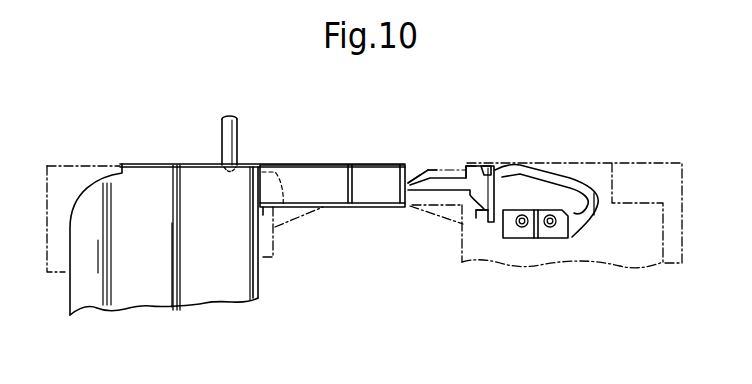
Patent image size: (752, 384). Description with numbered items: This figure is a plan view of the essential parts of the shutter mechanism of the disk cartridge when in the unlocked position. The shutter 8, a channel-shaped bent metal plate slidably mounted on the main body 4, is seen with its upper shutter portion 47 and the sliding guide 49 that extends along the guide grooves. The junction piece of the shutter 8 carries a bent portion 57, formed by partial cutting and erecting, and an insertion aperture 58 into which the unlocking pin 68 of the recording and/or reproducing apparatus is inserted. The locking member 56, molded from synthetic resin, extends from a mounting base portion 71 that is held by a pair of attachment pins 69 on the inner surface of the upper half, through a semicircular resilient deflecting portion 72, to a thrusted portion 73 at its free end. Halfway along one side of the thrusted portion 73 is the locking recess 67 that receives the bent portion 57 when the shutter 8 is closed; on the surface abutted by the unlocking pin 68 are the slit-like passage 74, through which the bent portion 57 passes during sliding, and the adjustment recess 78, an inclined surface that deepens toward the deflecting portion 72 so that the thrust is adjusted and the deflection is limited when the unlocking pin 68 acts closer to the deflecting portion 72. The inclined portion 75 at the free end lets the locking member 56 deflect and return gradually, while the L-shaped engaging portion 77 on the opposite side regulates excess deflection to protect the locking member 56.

The main body 4 is at (92, 168).
The shutter 8 is at (80, 290).
The upper shutter portion 47 is at (163, 298).
The sliding guide 49 is at (325, 173).
The locking member 56 is at (560, 172).
The bent portion 57 is at (283, 225).
The insertion aperture 58 is at (237, 155).
The locking recess 67 is at (490, 168).
The unlocking pin 68 is at (238, 128).
The attachment pins 69 is at (519, 226).
The mounting base portion 71 is at (545, 231).
The resilient deflecting portion 72 is at (597, 190).
The thrusted portion 73 is at (450, 165).
The slit-like passage 74 is at (430, 167).
The inclined portion 75 is at (418, 170).
The engaging portion 77 is at (485, 212).
The adjustment recess 78 is at (463, 167).